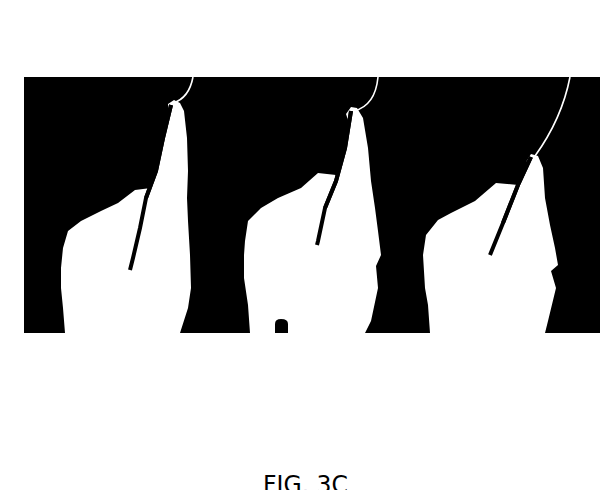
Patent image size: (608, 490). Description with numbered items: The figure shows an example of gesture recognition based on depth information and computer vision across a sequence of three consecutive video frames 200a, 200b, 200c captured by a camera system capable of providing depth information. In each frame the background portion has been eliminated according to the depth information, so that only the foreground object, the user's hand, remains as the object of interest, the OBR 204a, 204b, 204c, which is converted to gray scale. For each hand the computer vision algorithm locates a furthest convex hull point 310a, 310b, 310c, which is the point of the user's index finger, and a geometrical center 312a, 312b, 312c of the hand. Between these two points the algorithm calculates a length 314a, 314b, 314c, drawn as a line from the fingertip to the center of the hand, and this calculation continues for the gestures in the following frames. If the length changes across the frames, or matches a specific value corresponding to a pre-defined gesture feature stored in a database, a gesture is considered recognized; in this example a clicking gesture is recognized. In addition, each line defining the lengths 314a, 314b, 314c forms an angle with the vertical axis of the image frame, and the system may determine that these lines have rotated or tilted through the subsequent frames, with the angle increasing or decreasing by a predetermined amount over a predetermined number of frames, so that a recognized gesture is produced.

The frame 200a is at (79, 58).
The frame 200b is at (311, 58).
The frame 200c is at (503, 58).
The OBR 204a is at (103, 320).
The OBR 204b is at (300, 318).
The OBR 204c is at (468, 318).
The furthest convex hull point 310a is at (192, 76).
The furthest convex hull point 310b is at (373, 83).
The furthest convex hull point 310c is at (558, 106).
The geometrical center 312a is at (120, 260).
The geometrical center 312b is at (308, 233).
The geometrical center 312c is at (482, 243).
The length 314a is at (130, 223).
The length 314b is at (335, 217).
The length 314c is at (515, 229).